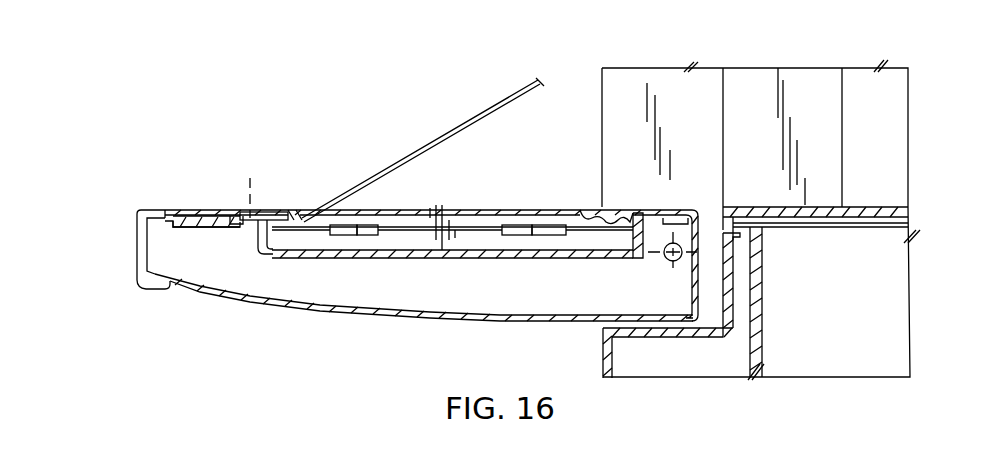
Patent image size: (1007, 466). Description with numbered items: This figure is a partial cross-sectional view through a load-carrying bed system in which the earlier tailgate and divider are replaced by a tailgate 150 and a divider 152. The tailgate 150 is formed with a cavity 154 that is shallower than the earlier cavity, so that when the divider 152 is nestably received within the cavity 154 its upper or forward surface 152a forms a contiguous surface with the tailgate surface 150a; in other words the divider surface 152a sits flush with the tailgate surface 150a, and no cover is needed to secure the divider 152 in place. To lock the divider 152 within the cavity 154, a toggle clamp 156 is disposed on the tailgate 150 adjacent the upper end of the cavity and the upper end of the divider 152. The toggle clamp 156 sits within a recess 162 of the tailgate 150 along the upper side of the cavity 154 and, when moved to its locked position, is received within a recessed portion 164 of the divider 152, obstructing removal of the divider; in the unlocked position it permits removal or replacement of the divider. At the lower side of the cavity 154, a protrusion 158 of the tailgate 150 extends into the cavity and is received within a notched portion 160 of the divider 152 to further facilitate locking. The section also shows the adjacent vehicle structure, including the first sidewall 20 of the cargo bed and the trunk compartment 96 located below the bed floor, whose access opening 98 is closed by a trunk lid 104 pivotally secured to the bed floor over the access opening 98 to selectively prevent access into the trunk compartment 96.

The first sidewall 20 is at (895, 113).
The trunk compartment 96 is at (895, 297).
The access opening 98 is at (810, 233).
The trunk lid 104 is at (868, 208).
The tailgate 150 is at (220, 298).
The tailgate surface 150a is at (203, 208).
The divider 152 is at (482, 207).
The upper or forward surface of the divider 152a is at (410, 208).
The cavity 154 is at (267, 256).
The toggle clamp 156 is at (275, 208).
The protrusion 158 is at (628, 210).
The notched portion 160 is at (623, 207).
The recess 162 is at (235, 208).
The recessed portion 164 is at (288, 208).